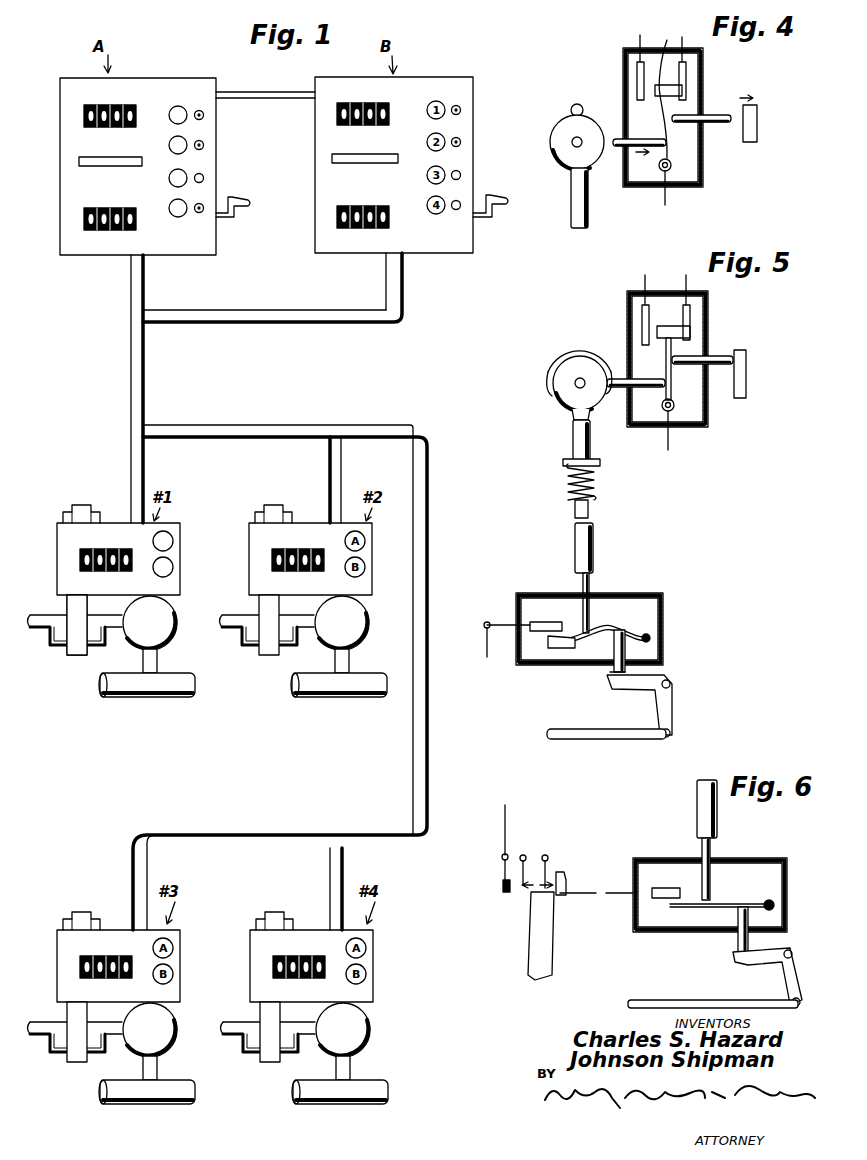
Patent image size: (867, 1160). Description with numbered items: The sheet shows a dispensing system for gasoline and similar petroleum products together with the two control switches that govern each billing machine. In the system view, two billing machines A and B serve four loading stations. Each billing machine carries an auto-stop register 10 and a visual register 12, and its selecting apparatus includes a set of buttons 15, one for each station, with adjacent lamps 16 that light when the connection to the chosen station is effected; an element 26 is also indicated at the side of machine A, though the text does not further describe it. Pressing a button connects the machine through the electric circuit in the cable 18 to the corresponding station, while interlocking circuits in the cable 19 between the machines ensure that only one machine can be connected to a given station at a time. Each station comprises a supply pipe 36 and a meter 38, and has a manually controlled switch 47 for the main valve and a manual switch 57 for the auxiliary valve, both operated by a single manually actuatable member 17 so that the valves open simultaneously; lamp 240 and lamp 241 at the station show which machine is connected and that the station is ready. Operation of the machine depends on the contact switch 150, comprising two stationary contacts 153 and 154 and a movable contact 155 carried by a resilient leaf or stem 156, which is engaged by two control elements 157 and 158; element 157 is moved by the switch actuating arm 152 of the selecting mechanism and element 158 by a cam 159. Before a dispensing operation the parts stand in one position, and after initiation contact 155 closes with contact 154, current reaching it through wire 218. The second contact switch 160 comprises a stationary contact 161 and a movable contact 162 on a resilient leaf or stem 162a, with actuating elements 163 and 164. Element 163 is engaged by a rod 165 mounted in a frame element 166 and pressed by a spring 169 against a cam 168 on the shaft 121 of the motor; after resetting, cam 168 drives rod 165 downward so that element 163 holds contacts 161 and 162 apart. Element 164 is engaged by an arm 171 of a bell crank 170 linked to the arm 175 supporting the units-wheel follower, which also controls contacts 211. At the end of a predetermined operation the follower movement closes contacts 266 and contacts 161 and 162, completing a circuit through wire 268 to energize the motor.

In FIG. 1, the auto-stop register 10 is at (66, 220).
In FIG. 1, the visual register 12 is at (65, 122).
In FIG. 1, the buttons 15 is at (204, 118).
In FIG. 1, the lamps 16 is at (180, 105).
In FIG. 1, the manually actuatable member 17 is at (84, 512).
In FIG. 1, the cable 18 is at (167, 426).
In FIG. 1, the cable 19 is at (275, 98).
In FIG. 1, the reset crank 26 is at (240, 212).
In FIG. 1, the pipe 36 is at (172, 700).
In FIG. 1, the meter 38 is at (177, 620).
In FIG. 1, the manually controlled switch 47 is at (63, 521).
In FIG. 1, the manual switch 57 is at (97, 518).
In FIG. 5, the shaft 121 is at (575, 385).
In FIG. 4, the contact switch 150 is at (616, 55).
In FIG. 5, the contact switch 150 is at (620, 297).
In FIG. 4, the switch actuating arm 152 is at (757, 112).
In FIG. 5, the switch actuating arm 152 is at (743, 370).
In FIG. 4, the stationary contact 153 is at (637, 80).
In FIG. 5, the stationary contact 153 is at (642, 322).
In FIG. 4, the stationary contact 154 is at (688, 80).
In FIG. 5, the stationary contact 154 is at (692, 325).
In FIG. 4, the movable contact 155 is at (663, 88).
In FIG. 5, the movable contact 155 is at (672, 328).
In FIG. 4, the resilient leaf or stem 156 is at (672, 153).
In FIG. 5, the resilient leaf or stem 156 is at (680, 390).
In FIG. 4, the control element 157 is at (713, 125).
In FIG. 5, the control element 157 is at (726, 353).
In FIG. 4, the control element 158 is at (648, 128).
In FIG. 5, the control element 158 is at (614, 378).
In FIG. 5, the cam 159 is at (552, 365).
In FIG. 5, the second contact switch 160 is at (655, 593).
In FIG. 6, the second contact switch 160 is at (643, 850).
In FIG. 5, the stationary contact 161 is at (560, 612).
In FIG. 6, the stationary contact 161 is at (676, 878).
In FIG. 5, the movable contact 162 is at (572, 650).
In FIG. 6, the movable contact 162 is at (674, 908).
In FIG. 5, the resilient leaf or stem 162a is at (622, 628).
In FIG. 5, the actuating element 163 is at (593, 582).
In FIG. 5, the actuating element 164 is at (628, 652).
In FIG. 5, the rod 165 is at (591, 450).
In FIG. 6, the rod 165 is at (718, 828).
In FIG. 5, the frame element 166 is at (563, 462).
In FIG. 4, the cam 168 is at (556, 130).
In FIG. 5, the cam 168 is at (567, 393).
In FIG. 4, the spring 169 is at (563, 170).
In FIG. 5, the spring 169 is at (568, 485).
In FIG. 5, the bell crank 170 is at (672, 696).
In FIG. 6, the bell crank 170 is at (788, 986).
In FIG. 5, the arm 171 is at (655, 676).
In FIG. 6, the arm 175 is at (533, 931).
In FIG. 6, the contacts 211 is at (493, 888).
In FIG. 5, the wire 218 is at (672, 440).
In FIG. 1, the lamp 240 is at (174, 538).
In FIG. 1, the lamp 241 is at (174, 566).
In FIG. 6, the contacts 266 is at (566, 872).
In FIG. 6, the wire 268 is at (588, 895).